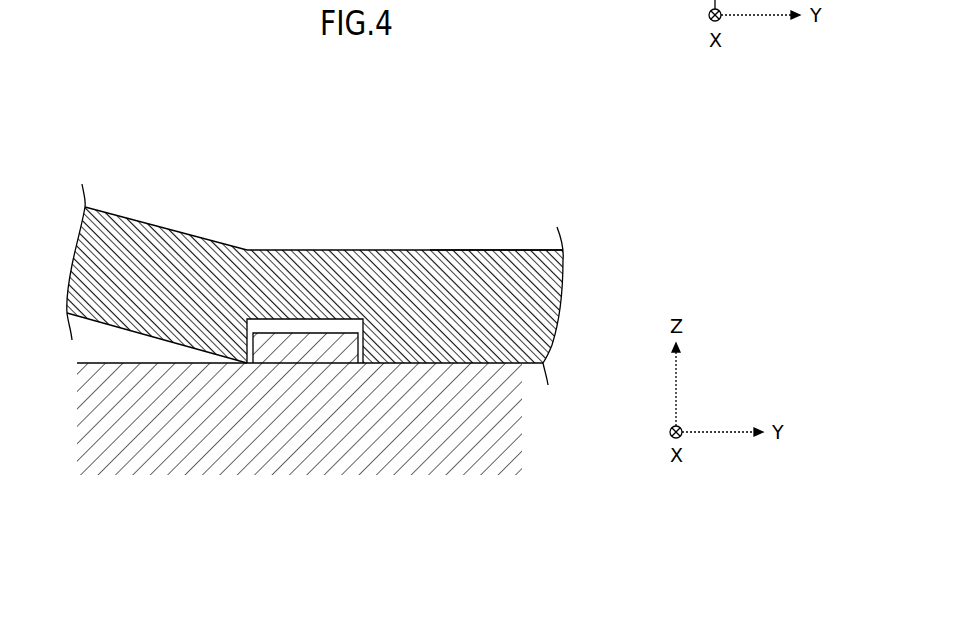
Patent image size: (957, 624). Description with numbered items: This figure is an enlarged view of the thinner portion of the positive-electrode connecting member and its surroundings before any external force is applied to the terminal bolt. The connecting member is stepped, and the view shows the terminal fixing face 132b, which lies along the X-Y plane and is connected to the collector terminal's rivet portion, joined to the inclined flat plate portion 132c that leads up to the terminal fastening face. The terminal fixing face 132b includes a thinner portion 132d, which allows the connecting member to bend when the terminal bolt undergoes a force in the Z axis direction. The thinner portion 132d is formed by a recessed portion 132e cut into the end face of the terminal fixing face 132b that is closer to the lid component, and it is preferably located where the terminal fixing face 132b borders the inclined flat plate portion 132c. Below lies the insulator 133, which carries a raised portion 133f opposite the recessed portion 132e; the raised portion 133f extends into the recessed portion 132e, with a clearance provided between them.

The terminal fixing face 132b is at (473, 295).
The inclined flat plate portion 132c is at (122, 250).
The thinner portion 132d is at (330, 297).
The recessed portion 132e is at (278, 303).
The insulator 133 is at (427, 413).
The raised portion 133f is at (300, 347).